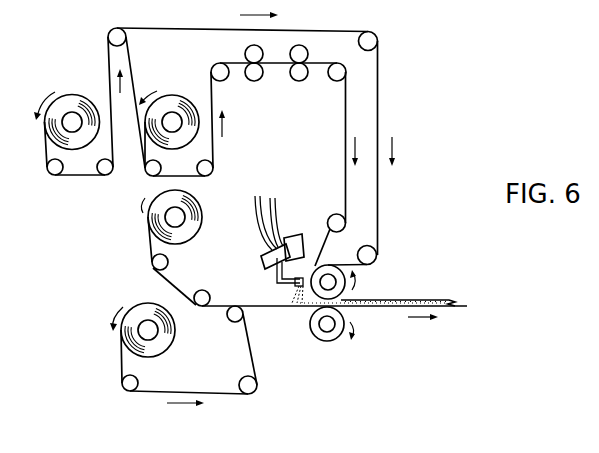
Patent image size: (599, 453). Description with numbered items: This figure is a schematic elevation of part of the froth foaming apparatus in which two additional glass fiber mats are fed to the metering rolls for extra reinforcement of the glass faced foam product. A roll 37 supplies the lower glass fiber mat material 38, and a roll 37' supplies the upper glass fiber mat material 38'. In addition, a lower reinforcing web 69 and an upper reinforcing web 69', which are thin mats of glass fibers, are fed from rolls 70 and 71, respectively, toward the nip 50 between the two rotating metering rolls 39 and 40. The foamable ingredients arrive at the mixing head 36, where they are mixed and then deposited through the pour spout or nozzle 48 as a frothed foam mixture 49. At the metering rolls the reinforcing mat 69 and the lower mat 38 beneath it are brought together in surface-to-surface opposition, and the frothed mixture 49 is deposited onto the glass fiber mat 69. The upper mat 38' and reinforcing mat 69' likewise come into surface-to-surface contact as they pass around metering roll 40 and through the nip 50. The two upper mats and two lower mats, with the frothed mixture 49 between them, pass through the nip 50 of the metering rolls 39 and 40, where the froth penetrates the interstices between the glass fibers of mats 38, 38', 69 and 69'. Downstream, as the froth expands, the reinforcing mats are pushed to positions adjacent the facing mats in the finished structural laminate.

The mixing head 36 is at (263, 261).
The roll of lower glass fiber mat material 37 is at (142, 316).
The roll of upper glass fiber mat material 37' is at (67, 102).
The lower glass fiber mat material 38 is at (226, 349).
The upper glass fiber mat material 38' is at (404, 148).
The metering roll 39 is at (330, 341).
The metering roll 40 is at (352, 290).
The pour spout or nozzle 48 is at (291, 283).
The frothed foam mixture 49 is at (293, 306).
The nip 50 is at (322, 323).
The lower reinforcing web 69 is at (185, 278).
The upper reinforcing web 69' is at (311, 229).
The roll 70 is at (201, 205).
The roll 71 is at (173, 94).